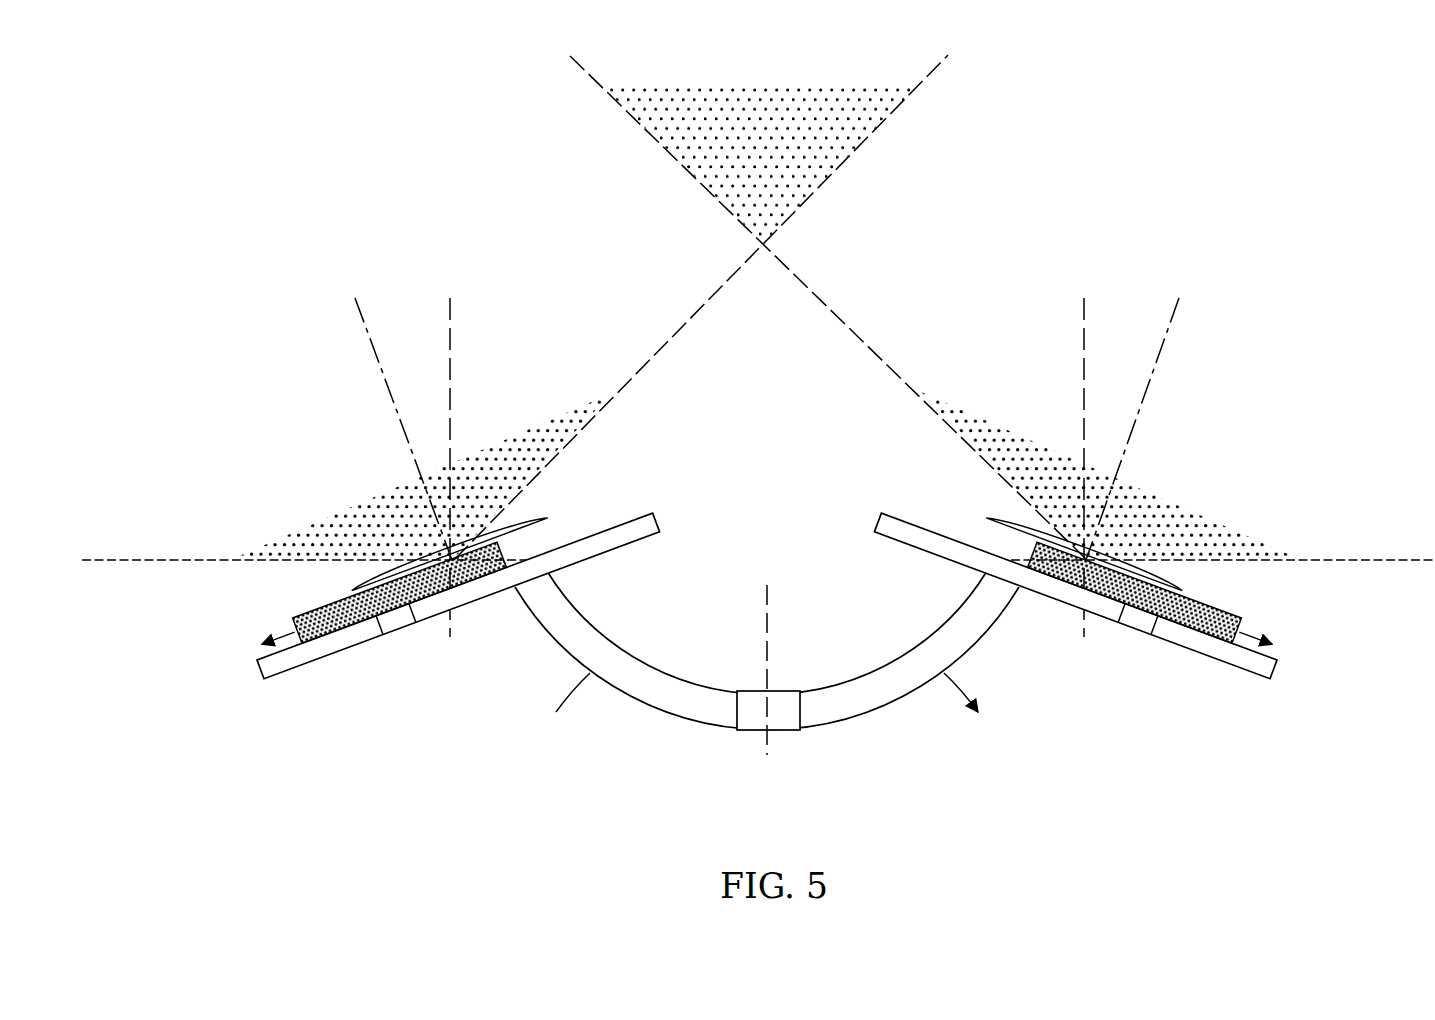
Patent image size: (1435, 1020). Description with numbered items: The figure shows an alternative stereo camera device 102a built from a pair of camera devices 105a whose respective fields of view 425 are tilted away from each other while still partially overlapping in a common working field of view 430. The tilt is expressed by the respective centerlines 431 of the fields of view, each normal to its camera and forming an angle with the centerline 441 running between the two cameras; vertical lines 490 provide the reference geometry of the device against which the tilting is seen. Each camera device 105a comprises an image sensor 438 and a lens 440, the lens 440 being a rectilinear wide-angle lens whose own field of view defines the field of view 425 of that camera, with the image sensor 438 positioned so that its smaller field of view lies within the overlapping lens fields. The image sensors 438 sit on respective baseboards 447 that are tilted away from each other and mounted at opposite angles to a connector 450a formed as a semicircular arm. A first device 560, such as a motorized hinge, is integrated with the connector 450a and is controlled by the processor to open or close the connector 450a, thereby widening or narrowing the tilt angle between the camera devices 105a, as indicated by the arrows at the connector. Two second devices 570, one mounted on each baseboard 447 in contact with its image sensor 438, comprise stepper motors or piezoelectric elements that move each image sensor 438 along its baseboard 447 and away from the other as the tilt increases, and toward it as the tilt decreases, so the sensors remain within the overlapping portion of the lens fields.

The stereo camera device 102a is at (1250, 165).
The pair of camera devices 105a is at (276, 620).
The field of view 425 is at (424, 536).
The common working field of view 430 is at (781, 156).
The centerline 431 is at (393, 400).
The image sensor 438 is at (508, 562).
The lens 440 is at (533, 531).
The centerline 441 is at (766, 613).
The baseboard 447 is at (660, 517).
The connector 450a is at (562, 650).
The lines 490 is at (448, 316).
The first device 560 is at (750, 734).
The second device 570 is at (405, 634).